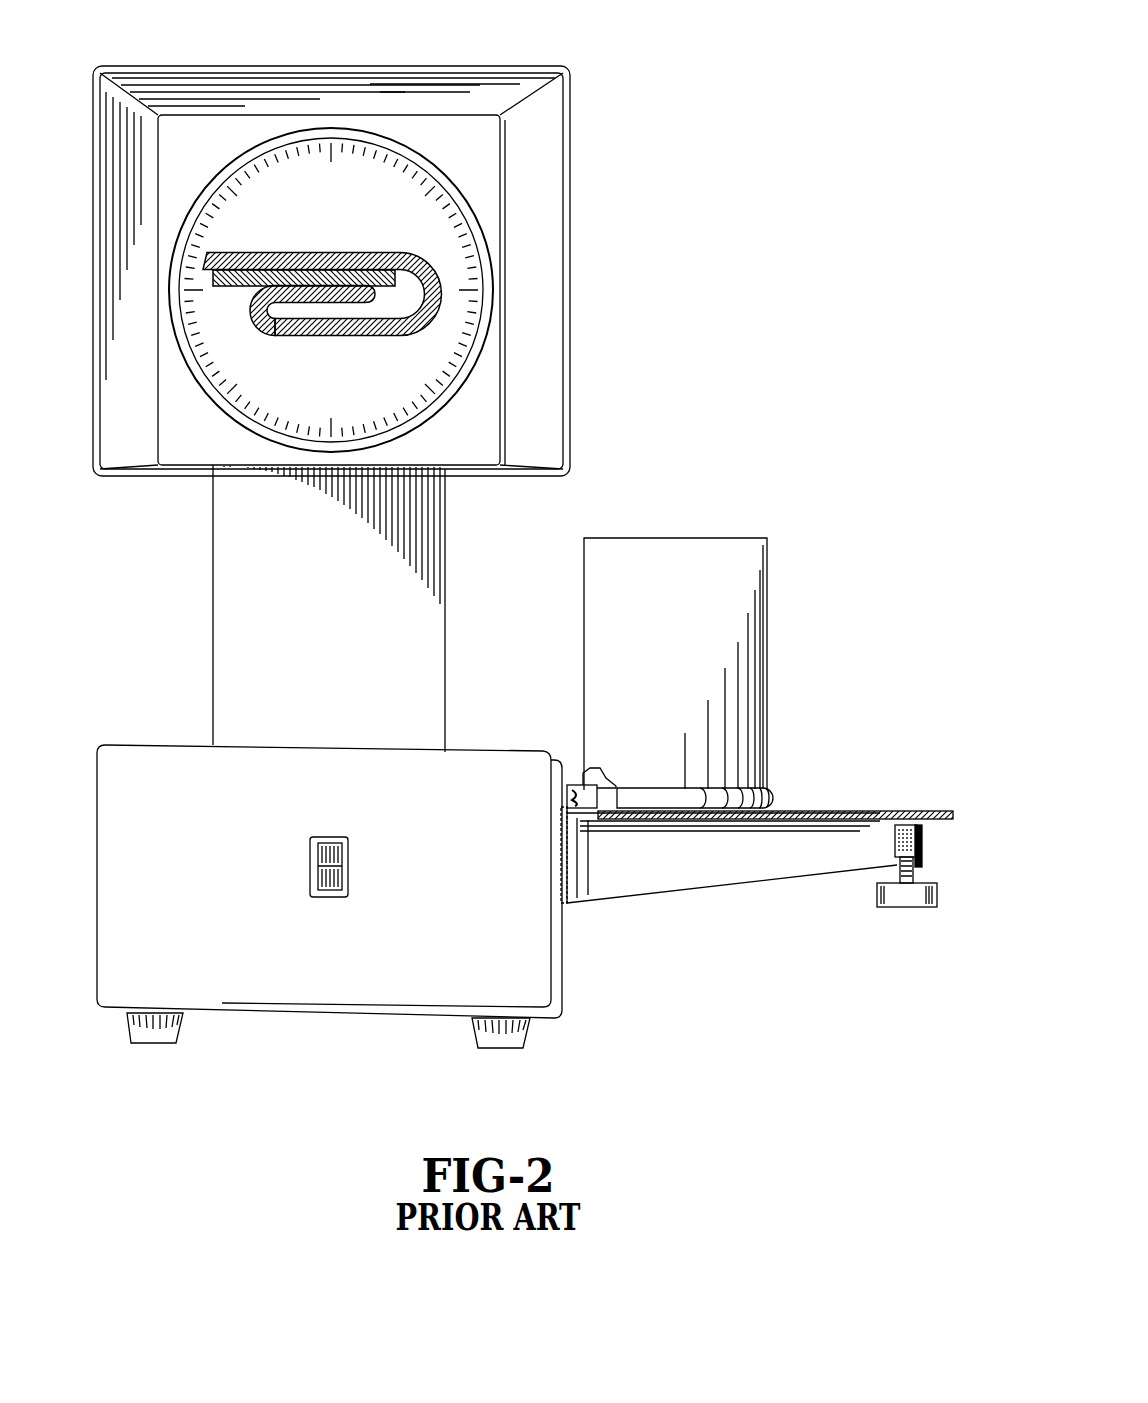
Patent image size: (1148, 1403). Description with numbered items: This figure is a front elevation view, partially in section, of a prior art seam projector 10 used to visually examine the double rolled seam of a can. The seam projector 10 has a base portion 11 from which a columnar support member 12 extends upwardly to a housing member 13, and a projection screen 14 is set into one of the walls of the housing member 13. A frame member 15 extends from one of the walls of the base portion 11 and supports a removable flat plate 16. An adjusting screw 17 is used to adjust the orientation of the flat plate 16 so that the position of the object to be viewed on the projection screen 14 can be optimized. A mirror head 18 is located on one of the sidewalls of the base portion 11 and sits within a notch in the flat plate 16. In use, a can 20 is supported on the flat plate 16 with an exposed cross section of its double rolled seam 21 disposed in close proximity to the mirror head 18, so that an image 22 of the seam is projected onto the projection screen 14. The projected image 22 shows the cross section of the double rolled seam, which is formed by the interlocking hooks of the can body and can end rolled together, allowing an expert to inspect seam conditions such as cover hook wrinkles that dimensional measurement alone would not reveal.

The seam projector 10 is at (670, 98).
The base portion 11 is at (332, 980).
The columnar support member 12 is at (238, 695).
The housing member 13 is at (528, 68).
The projection screen 14 is at (257, 382).
The frame member 15 is at (735, 868).
The flat plate 16 is at (815, 812).
The adjusting screw 17 is at (907, 897).
The mirror head 18 is at (577, 785).
The can 20 is at (703, 568).
The double rolled seam 21 is at (613, 782).
The image of the seam 22 is at (350, 252).